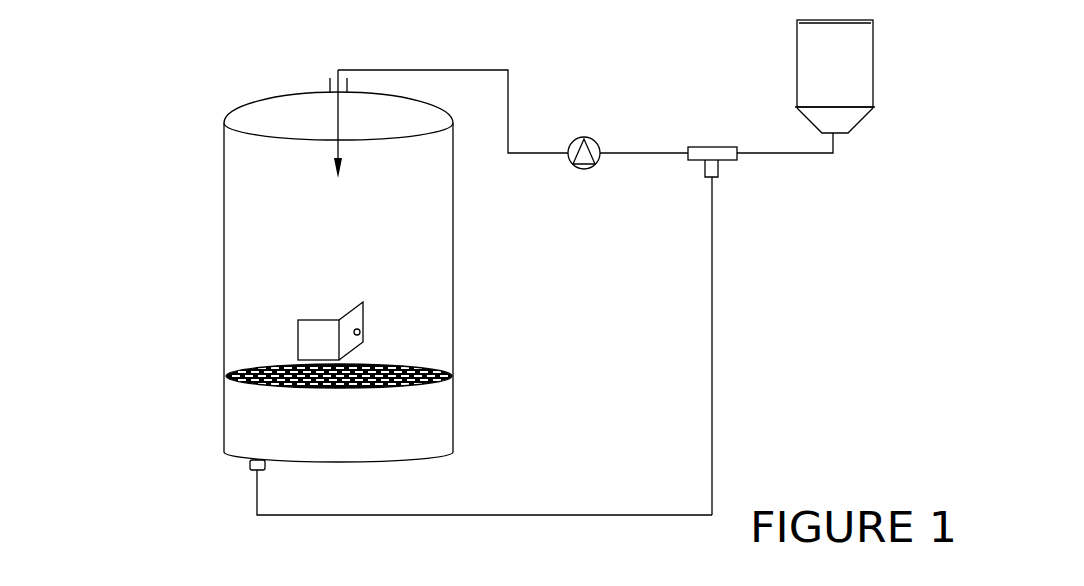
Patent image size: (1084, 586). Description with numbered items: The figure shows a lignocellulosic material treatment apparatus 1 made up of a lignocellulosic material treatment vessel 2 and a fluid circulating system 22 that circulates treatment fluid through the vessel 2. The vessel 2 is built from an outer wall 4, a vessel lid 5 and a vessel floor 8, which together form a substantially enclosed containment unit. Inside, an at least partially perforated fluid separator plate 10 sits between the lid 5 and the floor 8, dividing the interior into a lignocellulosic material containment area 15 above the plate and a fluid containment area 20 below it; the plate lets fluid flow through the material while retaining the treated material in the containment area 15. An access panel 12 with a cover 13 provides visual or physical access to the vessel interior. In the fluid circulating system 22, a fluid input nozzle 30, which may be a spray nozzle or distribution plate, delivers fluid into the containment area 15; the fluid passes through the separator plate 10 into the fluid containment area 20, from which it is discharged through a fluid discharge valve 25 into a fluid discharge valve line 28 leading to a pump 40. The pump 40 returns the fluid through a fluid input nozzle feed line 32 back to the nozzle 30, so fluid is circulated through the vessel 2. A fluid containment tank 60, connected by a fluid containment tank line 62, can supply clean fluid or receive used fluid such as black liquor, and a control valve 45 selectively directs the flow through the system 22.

The lignocellulosic material treatment apparatus 1 is at (113, 223).
The lignocellulosic material treatment vessel 2 is at (208, 193).
The outer wall 4 is at (456, 273).
The vessel lid 5 is at (260, 100).
The vessel floor 8 is at (387, 463).
The fluid separator plate 10 is at (433, 385).
The access panel 12 is at (296, 345).
The cover 13 is at (347, 310).
The lignocellulosic material containment area 15 is at (395, 350).
The fluid containment area 20 is at (418, 420).
The fluid circulating system 22 is at (722, 290).
The fluid discharge valve 25 is at (245, 470).
The fluid discharge valve line 28 is at (518, 518).
The fluid input nozzle 30 is at (352, 158).
The fluid input nozzle feed line 32 is at (512, 78).
The pump 40 is at (577, 172).
The control valve 45 is at (724, 140).
The fluid containment tank 60 is at (878, 70).
The fluid containment tank line 62 is at (800, 160).